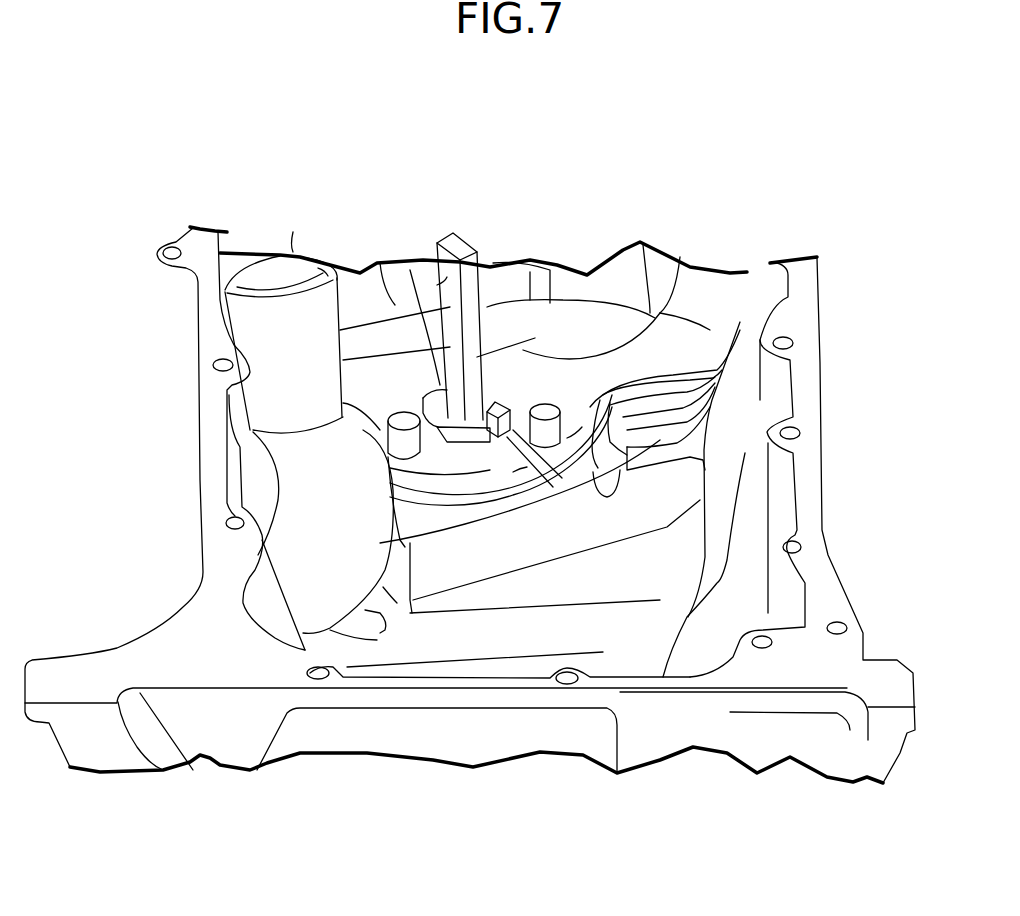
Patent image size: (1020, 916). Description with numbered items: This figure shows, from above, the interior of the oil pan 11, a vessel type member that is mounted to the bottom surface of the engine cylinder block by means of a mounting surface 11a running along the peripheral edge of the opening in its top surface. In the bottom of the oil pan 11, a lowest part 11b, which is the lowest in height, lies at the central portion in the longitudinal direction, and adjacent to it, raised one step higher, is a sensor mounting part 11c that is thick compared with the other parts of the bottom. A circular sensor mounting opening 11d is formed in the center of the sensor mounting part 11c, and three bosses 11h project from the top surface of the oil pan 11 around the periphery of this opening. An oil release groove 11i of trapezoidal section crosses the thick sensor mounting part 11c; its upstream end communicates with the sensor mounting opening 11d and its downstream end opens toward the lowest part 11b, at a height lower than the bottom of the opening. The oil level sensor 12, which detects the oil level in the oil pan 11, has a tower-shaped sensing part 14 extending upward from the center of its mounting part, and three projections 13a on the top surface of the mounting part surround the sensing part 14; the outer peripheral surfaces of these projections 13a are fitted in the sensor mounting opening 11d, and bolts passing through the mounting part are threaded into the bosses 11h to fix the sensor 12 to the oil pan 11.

The oil pan 11 is at (831, 395).
The mounting surface 11a is at (203, 364).
The lowest part 11b is at (667, 574).
The sensor mounting part 11c is at (480, 468).
The sensor mounting opening 11d is at (447, 427).
The bosses 11h is at (403, 421).
The oil release groove 11i is at (527, 467).
The oil level sensor 12 is at (487, 291).
The projections 13a is at (413, 316).
The sensing part 14 is at (523, 350).